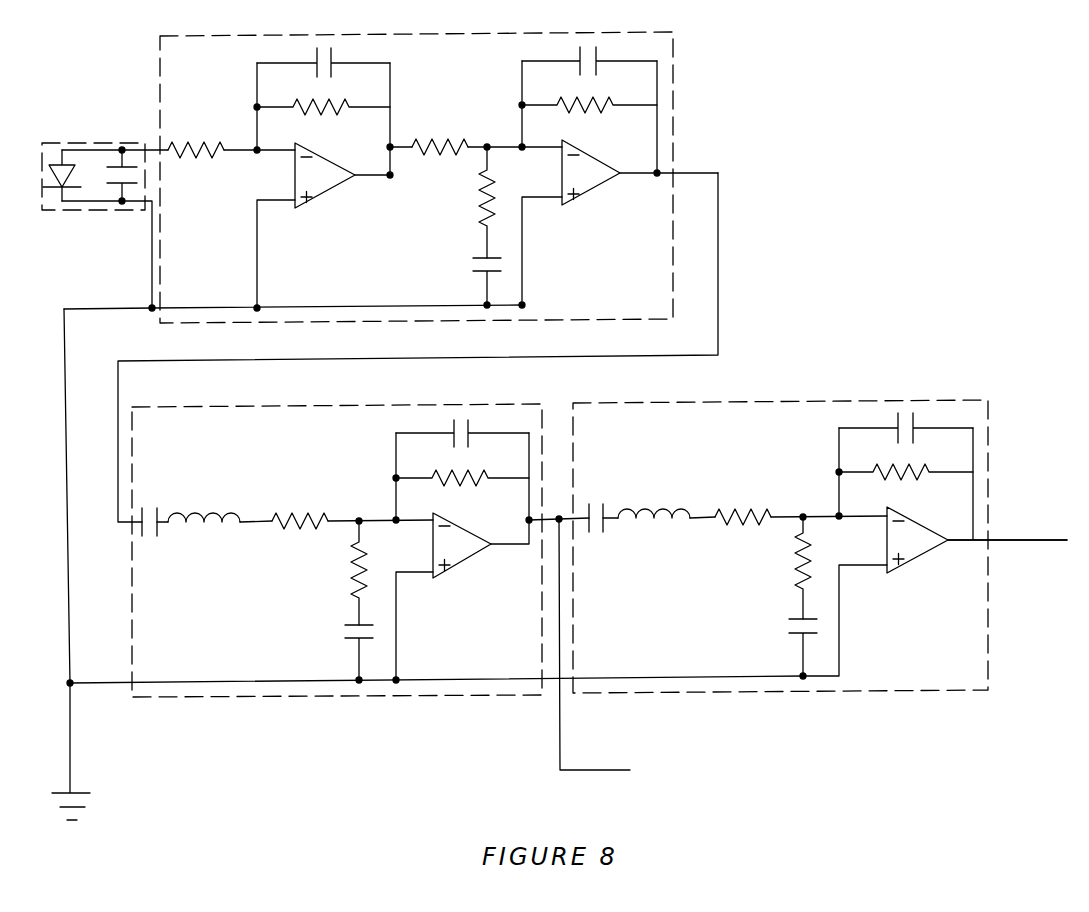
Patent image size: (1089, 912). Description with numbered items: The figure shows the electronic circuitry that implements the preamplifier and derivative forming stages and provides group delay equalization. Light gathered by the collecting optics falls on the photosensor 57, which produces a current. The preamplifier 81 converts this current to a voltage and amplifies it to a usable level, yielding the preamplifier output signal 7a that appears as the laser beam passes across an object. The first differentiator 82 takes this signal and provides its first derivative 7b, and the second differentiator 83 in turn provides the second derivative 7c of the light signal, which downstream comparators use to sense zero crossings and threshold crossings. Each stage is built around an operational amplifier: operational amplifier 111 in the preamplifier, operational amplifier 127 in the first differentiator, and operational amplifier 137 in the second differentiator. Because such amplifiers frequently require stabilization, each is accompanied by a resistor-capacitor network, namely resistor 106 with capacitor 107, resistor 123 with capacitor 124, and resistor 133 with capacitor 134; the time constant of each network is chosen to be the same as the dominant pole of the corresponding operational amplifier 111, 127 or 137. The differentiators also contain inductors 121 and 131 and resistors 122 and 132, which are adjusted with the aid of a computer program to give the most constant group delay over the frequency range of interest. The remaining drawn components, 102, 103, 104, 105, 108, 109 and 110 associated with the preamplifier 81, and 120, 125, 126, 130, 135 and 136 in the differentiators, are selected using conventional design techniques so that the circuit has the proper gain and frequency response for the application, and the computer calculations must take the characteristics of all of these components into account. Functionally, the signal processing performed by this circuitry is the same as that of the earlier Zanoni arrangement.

The photosensor 57 is at (122, 211).
The preamplifier 81 is at (673, 138).
The first differentiator 82 is at (401, 697).
The second differentiator 83 is at (841, 691).
The input resistor 102 is at (196, 140).
The feedback resistor 103 is at (323, 96).
The feedback capacitor 104 is at (323, 58).
The operational amplifier 105 is at (328, 170).
The resistor of resistor-capacitor network 106 is at (462, 202).
The capacitor of resistor-capacitor network 107 is at (465, 278).
The resistor 108 is at (440, 137).
The feedback resistor 109 is at (589, 94).
The feedback capacitor 110 is at (589, 55).
The operational amplifier 111 is at (597, 168).
The preamplifier output signal 7a is at (439, 347).
The first derivative signal 7b is at (594, 644).
The second derivative signal 7c is at (1007, 529).
The coupling capacitor 120 is at (157, 534).
The inductor 121 is at (204, 505).
The resistor 122 is at (300, 509).
The resistor of resistor-capacitor network 123 is at (336, 573).
The capacitor of resistor-capacitor network 124 is at (339, 651).
The feedback resistor 125 is at (462, 468).
The feedback capacitor 126 is at (462, 427).
The operational amplifier 127 is at (468, 544).
The coupling capacitor 130 is at (599, 530).
The inductor 131 is at (654, 502).
The resistor 132 is at (743, 505).
The resistor of resistor-capacitor network 133 is at (780, 568).
The capacitor of resistor-capacitor network 134 is at (781, 645).
The feedback resistor 135 is at (906, 461).
The feedback capacitor 136 is at (906, 423).
The operational amplifier 137 is at (923, 540).